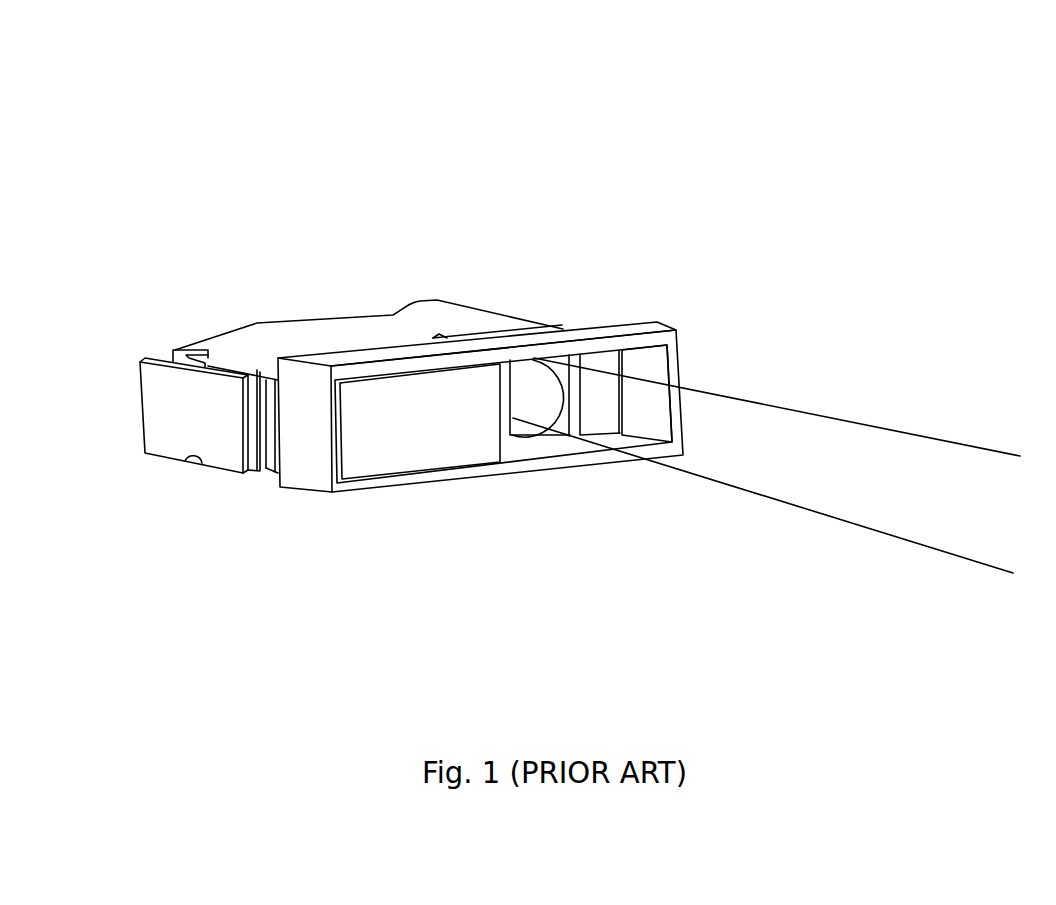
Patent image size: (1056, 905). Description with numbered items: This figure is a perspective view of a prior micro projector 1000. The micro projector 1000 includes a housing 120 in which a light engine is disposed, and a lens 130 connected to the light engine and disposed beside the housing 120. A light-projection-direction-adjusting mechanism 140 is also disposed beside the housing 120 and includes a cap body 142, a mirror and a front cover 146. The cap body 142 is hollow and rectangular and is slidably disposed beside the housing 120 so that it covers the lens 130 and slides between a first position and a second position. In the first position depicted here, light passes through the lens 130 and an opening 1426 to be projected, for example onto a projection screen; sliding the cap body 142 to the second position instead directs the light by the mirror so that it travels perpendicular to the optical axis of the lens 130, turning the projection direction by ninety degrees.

The micro projector 1000 is at (89, 84).
The housing 120 is at (318, 338).
The lens 130 is at (550, 397).
The light-projection-direction-adjusting mechanism 140 is at (468, 488).
The cap body 142 is at (307, 457).
The front cover 146 is at (400, 433).
The opening 1426 is at (660, 403).